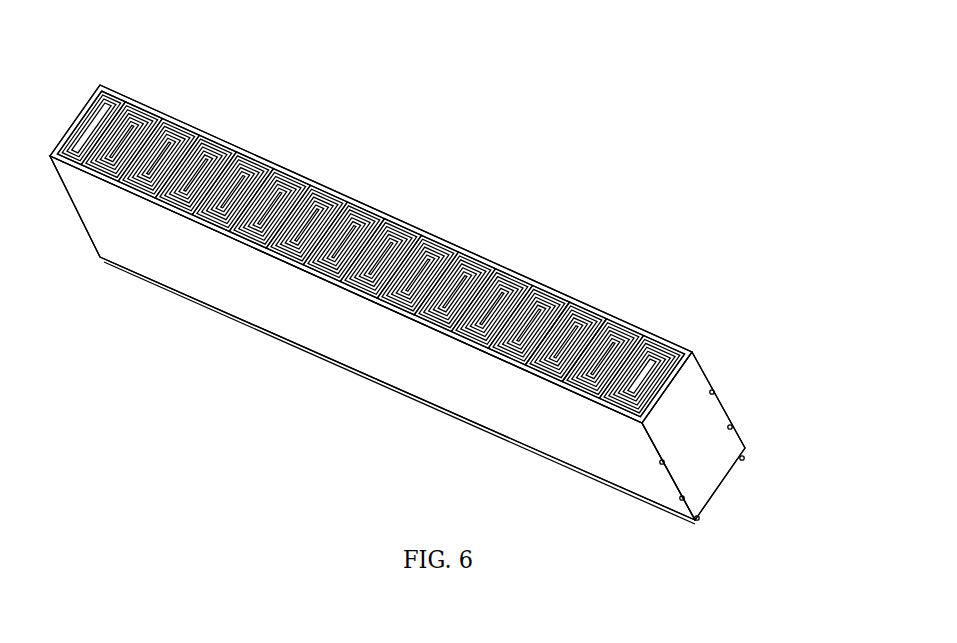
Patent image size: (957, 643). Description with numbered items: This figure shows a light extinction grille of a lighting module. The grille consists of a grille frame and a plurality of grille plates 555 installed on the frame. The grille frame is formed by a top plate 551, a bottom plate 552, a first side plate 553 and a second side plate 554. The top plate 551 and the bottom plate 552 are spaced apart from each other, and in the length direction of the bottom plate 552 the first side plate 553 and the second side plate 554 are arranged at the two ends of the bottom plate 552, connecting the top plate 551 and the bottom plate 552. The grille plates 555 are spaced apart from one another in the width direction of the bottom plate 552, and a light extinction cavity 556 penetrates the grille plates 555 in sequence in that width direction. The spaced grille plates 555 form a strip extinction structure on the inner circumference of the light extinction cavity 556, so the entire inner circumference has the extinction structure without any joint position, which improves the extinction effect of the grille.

The top plate 551 is at (637, 325).
The bottom plate 552 is at (428, 372).
The first side plate 553 is at (702, 430).
The second side plate 554 is at (73, 115).
The grille plates 555 is at (343, 198).
The light extinction cavity 556 is at (552, 335).